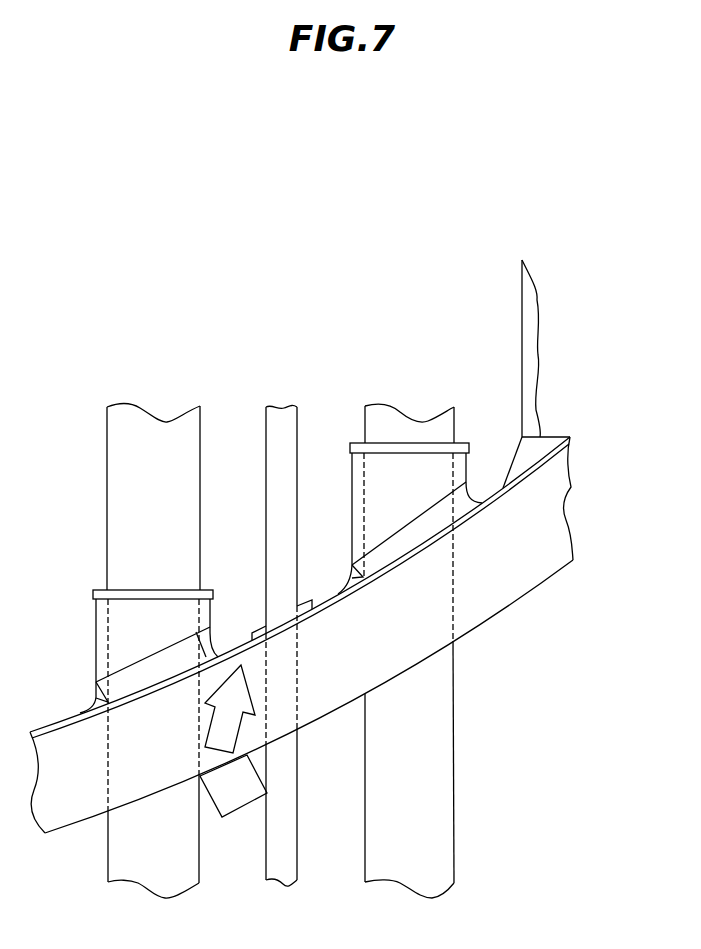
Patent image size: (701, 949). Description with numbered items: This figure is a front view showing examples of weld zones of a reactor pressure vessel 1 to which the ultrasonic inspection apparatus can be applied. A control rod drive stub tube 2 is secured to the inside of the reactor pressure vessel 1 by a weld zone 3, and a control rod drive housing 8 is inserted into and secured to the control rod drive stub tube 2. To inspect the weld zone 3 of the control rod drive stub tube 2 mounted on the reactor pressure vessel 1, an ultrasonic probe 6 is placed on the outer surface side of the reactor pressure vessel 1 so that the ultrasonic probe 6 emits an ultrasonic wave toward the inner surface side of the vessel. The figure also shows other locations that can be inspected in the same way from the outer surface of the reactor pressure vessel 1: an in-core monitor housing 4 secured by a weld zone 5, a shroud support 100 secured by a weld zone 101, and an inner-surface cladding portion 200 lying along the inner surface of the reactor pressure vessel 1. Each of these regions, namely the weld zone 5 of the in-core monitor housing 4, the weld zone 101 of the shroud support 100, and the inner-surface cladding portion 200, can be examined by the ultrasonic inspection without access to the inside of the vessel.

The reactor pressure vessel 1 is at (510, 588).
The control rod drive stub tube 2 is at (135, 620).
The weld zone 3 is at (212, 650).
The in-core monitor housing 4 is at (282, 416).
The weld zone 5 is at (302, 592).
The ultrasonic probe 6 is at (237, 793).
The control rod drive housing 8 is at (150, 428).
The shroud support 100 is at (532, 363).
The weld zone 101 is at (540, 454).
The inner-surface cladding portion 200 is at (500, 494).